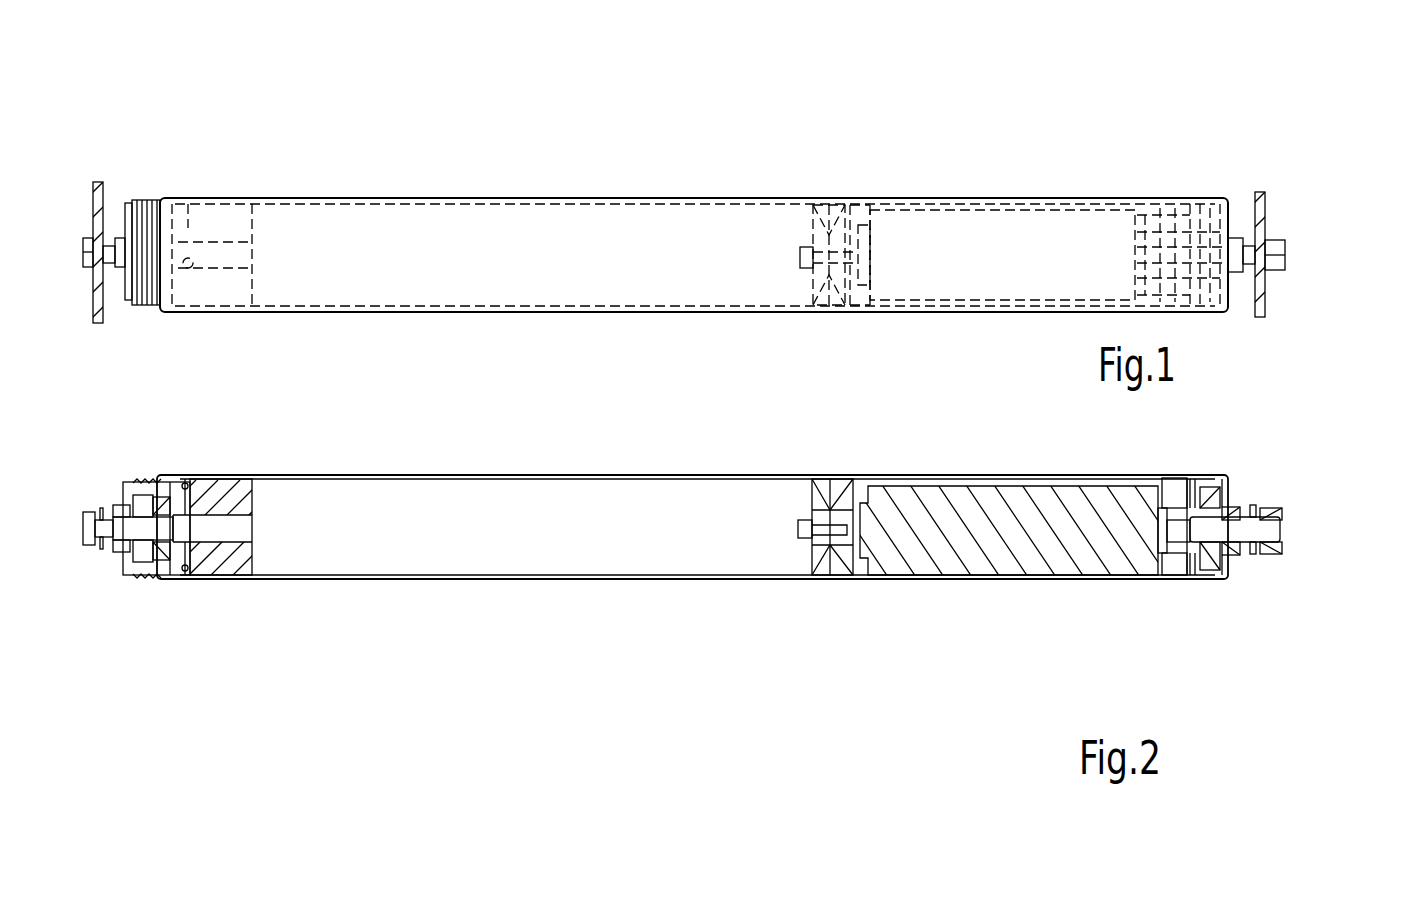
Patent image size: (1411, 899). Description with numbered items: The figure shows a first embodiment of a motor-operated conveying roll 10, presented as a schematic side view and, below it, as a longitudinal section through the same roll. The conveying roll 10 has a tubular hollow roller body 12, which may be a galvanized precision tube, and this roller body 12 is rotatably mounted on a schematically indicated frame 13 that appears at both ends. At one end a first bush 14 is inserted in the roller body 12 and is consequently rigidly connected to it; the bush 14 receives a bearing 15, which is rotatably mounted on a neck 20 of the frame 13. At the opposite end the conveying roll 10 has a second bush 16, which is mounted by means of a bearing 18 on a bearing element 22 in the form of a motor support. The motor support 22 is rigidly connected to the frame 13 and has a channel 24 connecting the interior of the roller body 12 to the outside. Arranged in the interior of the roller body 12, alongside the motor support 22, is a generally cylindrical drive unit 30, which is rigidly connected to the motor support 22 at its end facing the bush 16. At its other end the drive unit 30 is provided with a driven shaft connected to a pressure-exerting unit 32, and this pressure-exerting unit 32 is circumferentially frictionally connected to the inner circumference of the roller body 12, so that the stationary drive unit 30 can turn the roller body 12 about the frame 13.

In FIG. 1, the motor-operated conveying roll 10 is at (1045, 183).
In FIG. 2, the motor-operated conveying roll 10 is at (665, 622).
In FIG. 1, the tubular hollow roller body 12 is at (600, 198).
In FIG. 2, the tubular hollow roller body 12 is at (523, 580).
In FIG. 1, the frame 13 is at (92, 202).
In FIG. 2, the first bush 14 is at (220, 474).
In FIG. 2, the bearing 15 is at (170, 578).
In FIG. 2, the second bush 16 is at (1227, 487).
In FIG. 2, the bearing 18 is at (1205, 590).
In FIG. 2, the neck 20 is at (85, 545).
In FIG. 2, the motor support 22 is at (1280, 528).
In FIG. 2, the channel 24 is at (1238, 553).
In FIG. 2, the drive unit 30 is at (1027, 525).
In FIG. 2, the pressure-exerting unit 32 is at (850, 588).